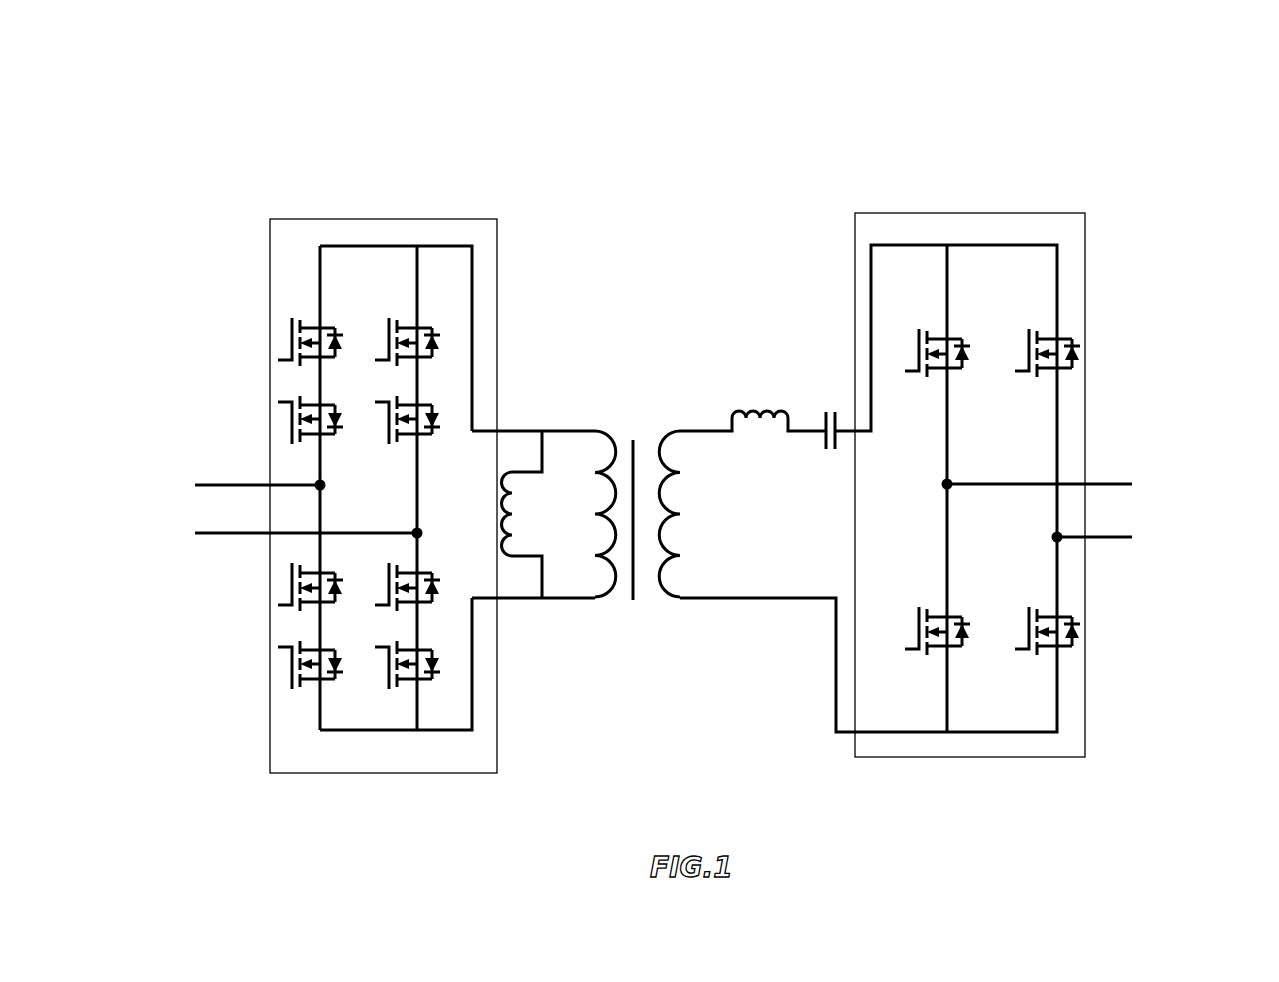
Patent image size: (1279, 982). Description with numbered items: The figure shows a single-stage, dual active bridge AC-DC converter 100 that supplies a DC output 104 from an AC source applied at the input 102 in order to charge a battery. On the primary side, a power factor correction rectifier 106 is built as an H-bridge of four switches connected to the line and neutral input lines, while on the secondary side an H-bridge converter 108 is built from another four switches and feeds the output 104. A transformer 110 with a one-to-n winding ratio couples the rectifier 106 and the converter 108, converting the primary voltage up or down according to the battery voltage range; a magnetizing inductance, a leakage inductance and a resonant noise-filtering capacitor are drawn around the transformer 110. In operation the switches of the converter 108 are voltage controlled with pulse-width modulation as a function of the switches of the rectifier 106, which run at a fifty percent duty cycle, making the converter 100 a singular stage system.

The single-stage dual active bridge AC-DC converter 100 is at (1180, 114).
The input 102 is at (166, 514).
The output 104 is at (1143, 513).
The power factor correction rectifier 106 is at (497, 270).
The H-bridge converter 108 is at (1085, 275).
The transformer 110 is at (666, 393).